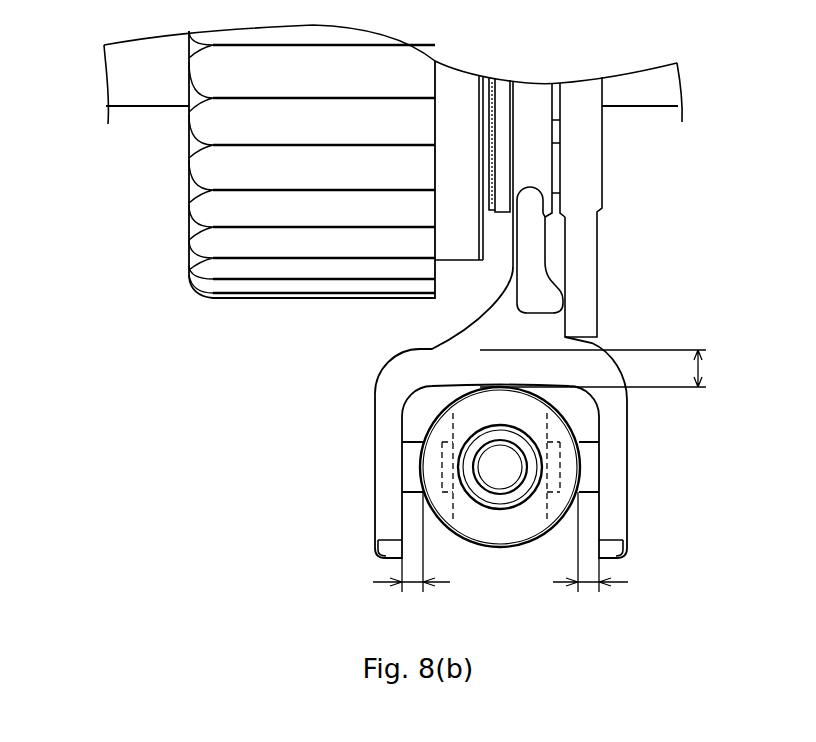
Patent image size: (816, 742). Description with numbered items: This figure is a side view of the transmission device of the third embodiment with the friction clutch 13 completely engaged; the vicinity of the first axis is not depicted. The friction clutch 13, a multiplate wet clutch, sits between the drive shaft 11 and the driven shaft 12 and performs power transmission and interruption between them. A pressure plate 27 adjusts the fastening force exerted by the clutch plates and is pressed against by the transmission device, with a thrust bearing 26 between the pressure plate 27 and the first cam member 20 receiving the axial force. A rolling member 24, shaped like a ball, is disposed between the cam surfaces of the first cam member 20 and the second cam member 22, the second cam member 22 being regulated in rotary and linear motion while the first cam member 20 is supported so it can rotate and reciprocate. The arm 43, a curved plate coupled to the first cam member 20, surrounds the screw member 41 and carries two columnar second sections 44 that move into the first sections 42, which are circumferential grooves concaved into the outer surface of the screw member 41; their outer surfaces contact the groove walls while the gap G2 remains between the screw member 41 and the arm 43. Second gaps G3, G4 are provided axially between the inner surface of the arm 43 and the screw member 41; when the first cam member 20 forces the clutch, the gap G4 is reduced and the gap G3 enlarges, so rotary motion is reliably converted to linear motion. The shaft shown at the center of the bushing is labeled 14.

The drive shaft 11 is at (150, 88).
The driven shaft 12 is at (640, 95).
The friction clutch 13 is at (216, 207).
The shaft pin 14 is at (501, 471).
The first cam member 20 is at (531, 91).
The second cam member 22 is at (582, 253).
The rolling member 24 is at (556, 168).
The bearing 26 is at (497, 77).
The pressure plate 27 is at (452, 78).
The screw member 41 is at (468, 413).
The first sections 42 is at (443, 438).
The arm 43 is at (390, 521).
The second sections 44 is at (405, 462).
The gap G2 is at (700, 368).
The second gap G3 is at (410, 586).
The second gap G4 is at (590, 586).